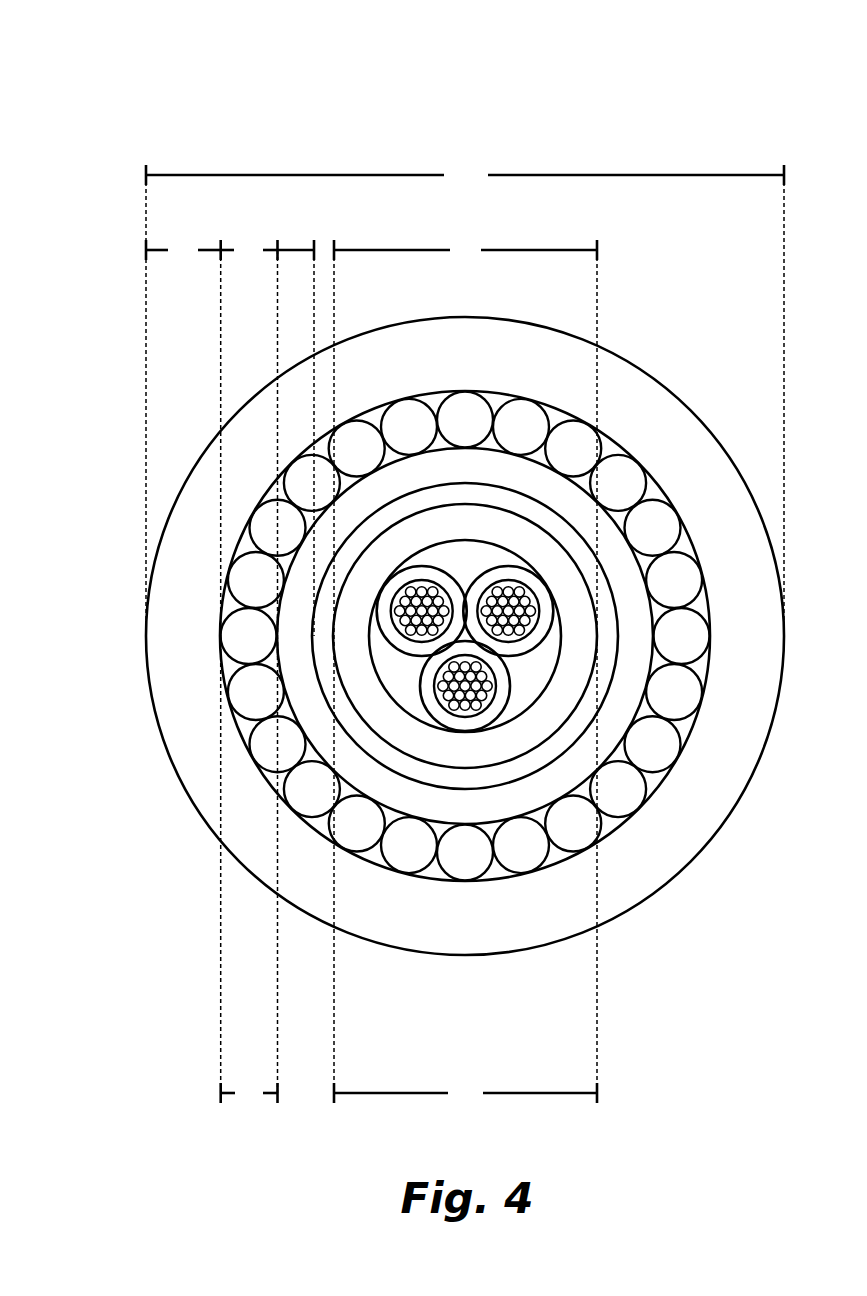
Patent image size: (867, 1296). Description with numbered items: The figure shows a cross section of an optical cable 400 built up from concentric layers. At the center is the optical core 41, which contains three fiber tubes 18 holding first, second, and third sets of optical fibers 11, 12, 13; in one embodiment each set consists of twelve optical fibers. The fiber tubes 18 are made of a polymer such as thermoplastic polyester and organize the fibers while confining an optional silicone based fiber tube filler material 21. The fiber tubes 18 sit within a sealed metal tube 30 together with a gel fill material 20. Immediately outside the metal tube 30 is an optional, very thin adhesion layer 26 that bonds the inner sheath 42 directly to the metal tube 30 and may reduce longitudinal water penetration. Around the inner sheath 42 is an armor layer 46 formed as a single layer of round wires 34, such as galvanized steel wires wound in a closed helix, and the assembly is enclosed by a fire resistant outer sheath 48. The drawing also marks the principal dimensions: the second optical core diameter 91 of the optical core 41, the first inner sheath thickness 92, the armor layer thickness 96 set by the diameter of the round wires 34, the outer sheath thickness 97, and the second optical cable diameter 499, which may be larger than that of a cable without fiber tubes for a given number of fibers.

The optical cable 400 is at (128, 71).
The second optical cable diameter 499 is at (465, 176).
The outer sheath thickness 97 is at (183, 251).
The armor layer thickness 96 is at (249, 251).
The first inner sheath thickness 92 is at (297, 247).
The second optical core diameter 91 is at (465, 251).
The round wires 34 is at (449, 433).
The adhesion layer 26 is at (527, 510).
The fill material 20 is at (474, 549).
The third set of optical fibers 13 is at (416, 593).
The first set of optical fibers 11 is at (516, 593).
The second set of optical fibers 12 is at (444, 687).
The fiber tubes 18 is at (390, 637).
The fiber tube filler material 21 is at (531, 629).
The metal tube 30 is at (450, 761).
The inner sheath 42 is at (450, 815).
The outer sheath 48 is at (450, 925).
The armor layer 46 is at (249, 1094).
The optical core 41 is at (465, 1094).